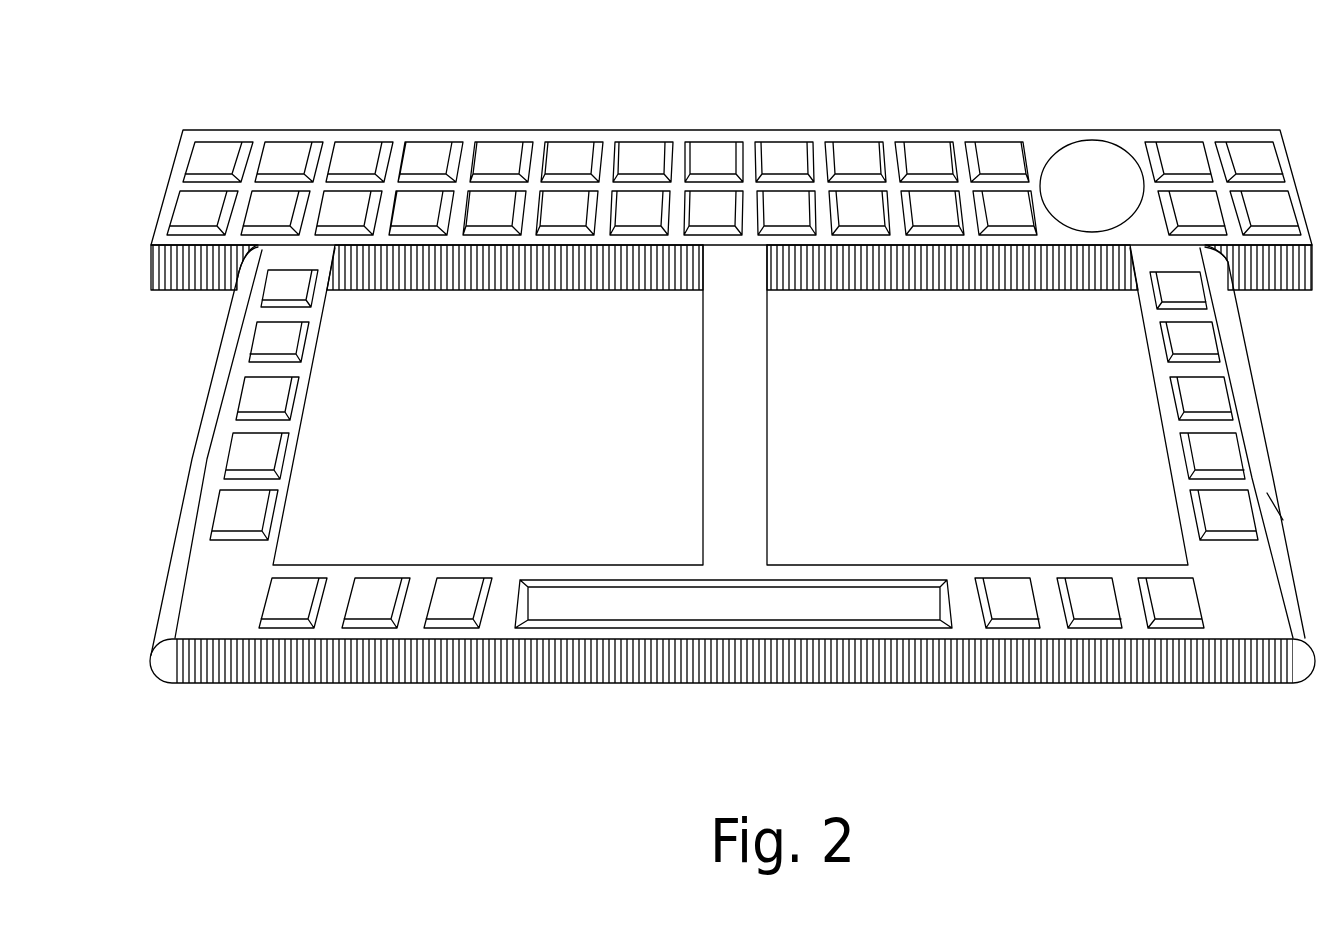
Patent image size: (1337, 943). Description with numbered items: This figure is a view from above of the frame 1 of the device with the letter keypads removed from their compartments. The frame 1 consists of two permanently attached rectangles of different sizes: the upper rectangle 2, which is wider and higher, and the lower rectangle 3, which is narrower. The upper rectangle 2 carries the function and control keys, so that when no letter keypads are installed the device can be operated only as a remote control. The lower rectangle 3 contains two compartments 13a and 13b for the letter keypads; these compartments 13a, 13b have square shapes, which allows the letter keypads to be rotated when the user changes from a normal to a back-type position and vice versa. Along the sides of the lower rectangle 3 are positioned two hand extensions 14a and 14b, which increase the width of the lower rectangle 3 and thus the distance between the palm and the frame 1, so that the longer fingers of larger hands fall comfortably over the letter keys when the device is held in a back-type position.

The frame 1 is at (393, 130).
The upper rectangle 2 is at (1043, 147).
The lower rectangle 3 is at (1242, 605).
The compartment 13a is at (540, 465).
The compartment 13b is at (985, 478).
The hand extension 14a is at (162, 665).
The hand extension 14b is at (1228, 317).